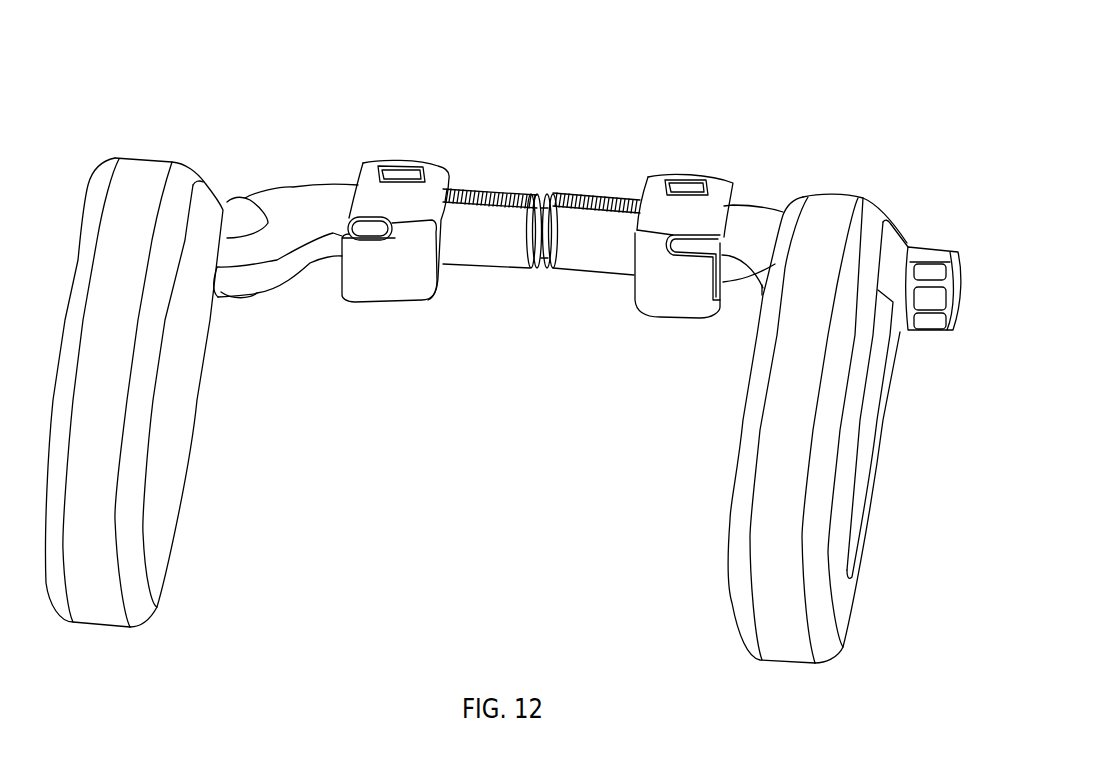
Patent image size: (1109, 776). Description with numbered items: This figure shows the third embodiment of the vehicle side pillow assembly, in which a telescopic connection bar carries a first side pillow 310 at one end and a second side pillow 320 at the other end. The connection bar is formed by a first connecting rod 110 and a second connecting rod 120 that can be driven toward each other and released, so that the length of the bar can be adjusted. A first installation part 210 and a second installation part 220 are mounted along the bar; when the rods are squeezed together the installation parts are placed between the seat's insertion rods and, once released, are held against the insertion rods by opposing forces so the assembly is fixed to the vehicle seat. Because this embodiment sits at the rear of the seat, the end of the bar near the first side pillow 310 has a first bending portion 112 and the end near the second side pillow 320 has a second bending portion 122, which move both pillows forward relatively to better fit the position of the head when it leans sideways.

The first connecting rod 110 is at (473, 258).
The second connecting rod 120 is at (607, 257).
The first bending portion 112 is at (265, 278).
The second bending portion 122 is at (719, 302).
The first installation part 210 is at (368, 288).
The second installation part 220 is at (660, 303).
The first side pillow 310 is at (145, 137).
The second side pillow 320 is at (840, 180).